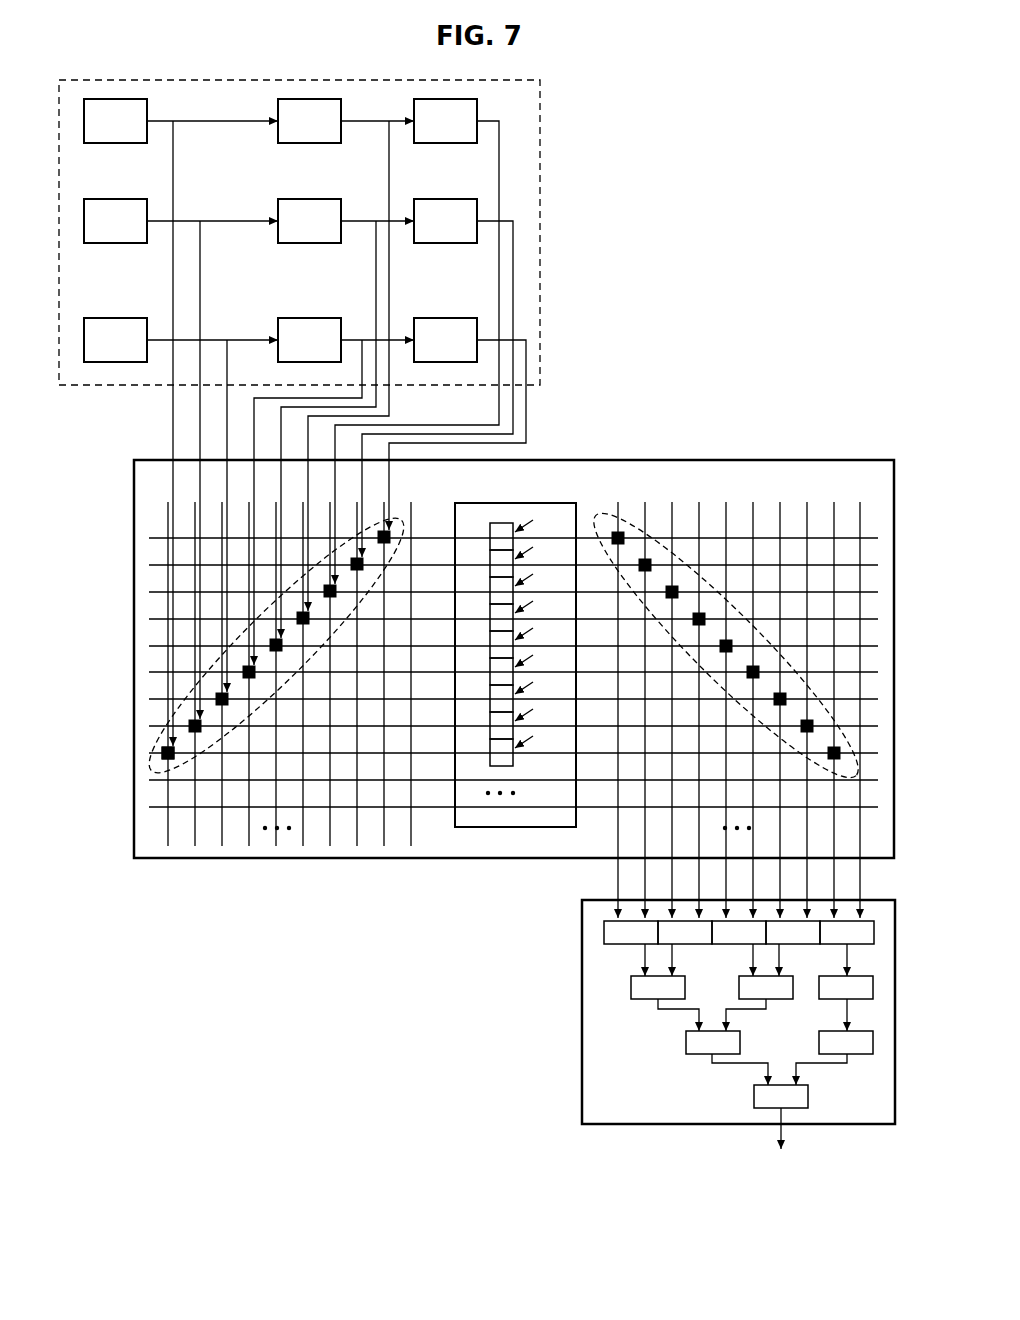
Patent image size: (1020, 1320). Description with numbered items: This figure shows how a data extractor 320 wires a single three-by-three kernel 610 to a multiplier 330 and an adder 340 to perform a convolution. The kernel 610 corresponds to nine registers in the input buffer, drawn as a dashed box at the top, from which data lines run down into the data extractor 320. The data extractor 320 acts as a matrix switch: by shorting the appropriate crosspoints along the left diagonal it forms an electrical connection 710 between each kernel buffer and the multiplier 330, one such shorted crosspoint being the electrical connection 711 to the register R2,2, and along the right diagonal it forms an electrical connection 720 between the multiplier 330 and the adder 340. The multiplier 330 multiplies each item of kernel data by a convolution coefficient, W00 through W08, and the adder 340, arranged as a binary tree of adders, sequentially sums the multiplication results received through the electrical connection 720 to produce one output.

The kernel 610 is at (540, 233).
The data extractor 320 is at (813, 459).
The electrical connection 710 is at (393, 527).
The electrical connection 711 is at (175, 758).
The electrical connection 720 is at (625, 520).
The multiplier 330 is at (513, 827).
The adder 340 is at (582, 1012).